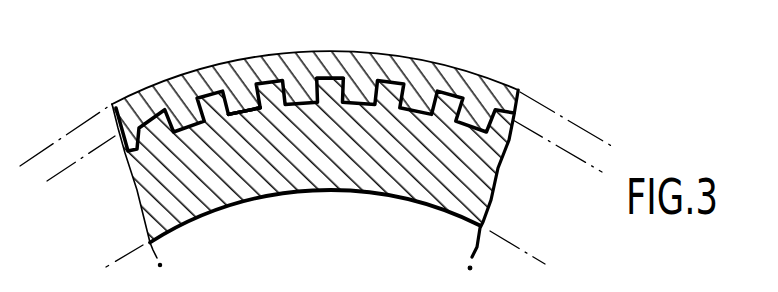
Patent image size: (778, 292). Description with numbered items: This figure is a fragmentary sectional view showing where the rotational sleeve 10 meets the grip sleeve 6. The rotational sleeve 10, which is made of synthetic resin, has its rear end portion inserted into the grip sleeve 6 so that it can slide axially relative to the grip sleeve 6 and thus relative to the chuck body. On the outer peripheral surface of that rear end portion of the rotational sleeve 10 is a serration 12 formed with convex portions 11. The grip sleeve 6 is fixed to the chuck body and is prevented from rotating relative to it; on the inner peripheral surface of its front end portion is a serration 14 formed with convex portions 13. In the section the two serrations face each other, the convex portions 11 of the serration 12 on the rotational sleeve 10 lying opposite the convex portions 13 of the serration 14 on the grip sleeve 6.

The grip sleeve 6 is at (421, 72).
The rotational sleeve 10 is at (327, 193).
The convex portions 11 is at (338, 90).
The serration 12 is at (208, 91).
The convex portions 13 is at (237, 102).
The serration 14 is at (251, 117).